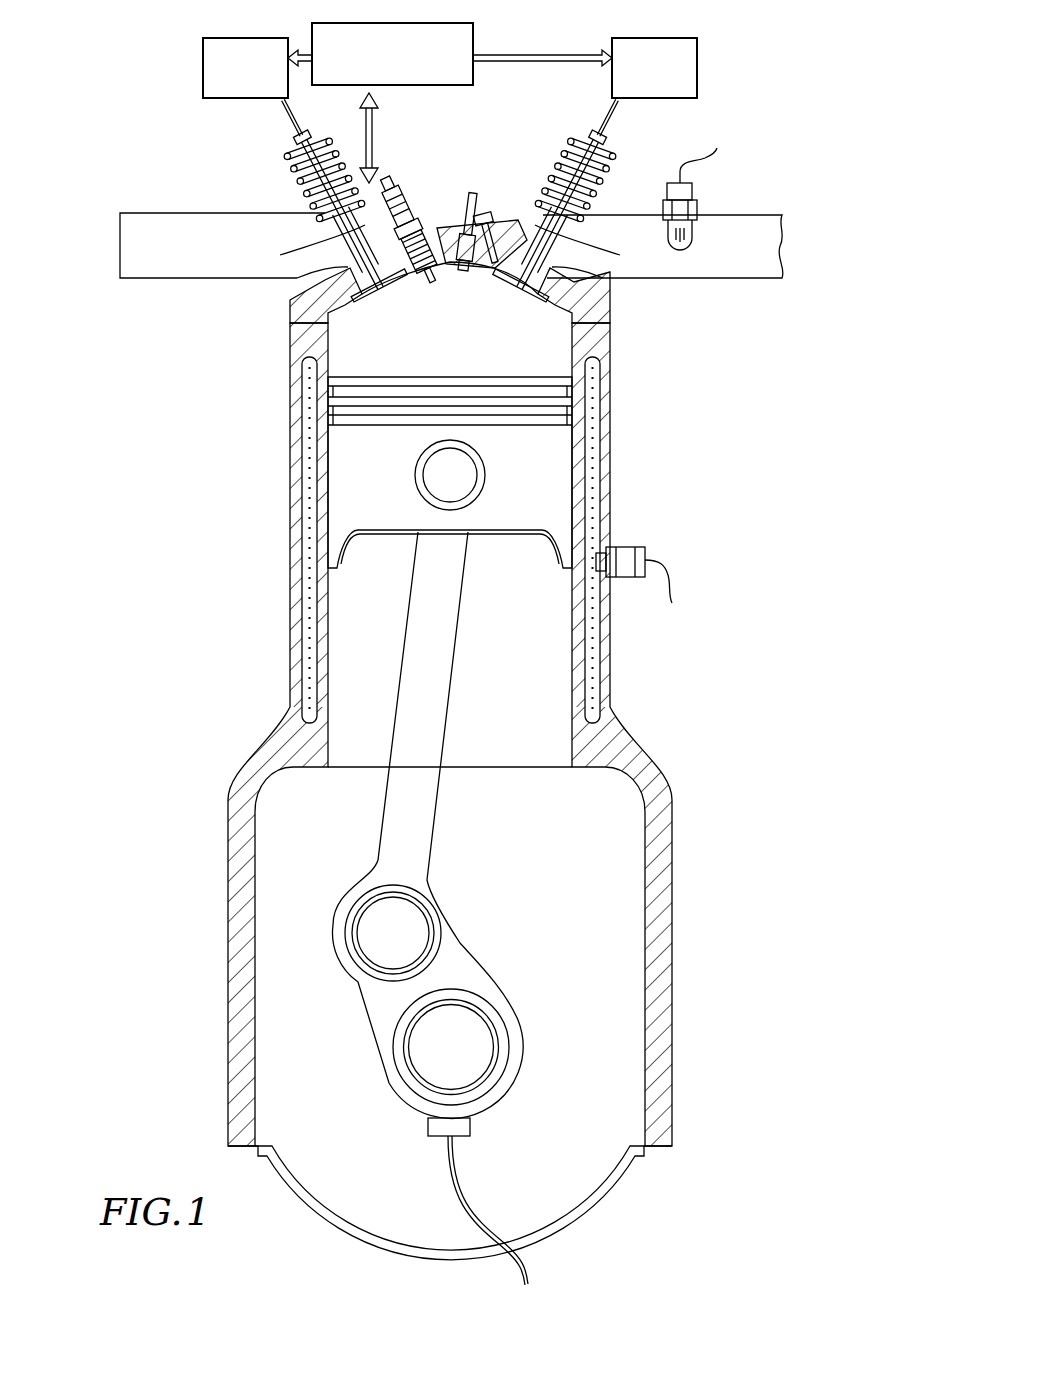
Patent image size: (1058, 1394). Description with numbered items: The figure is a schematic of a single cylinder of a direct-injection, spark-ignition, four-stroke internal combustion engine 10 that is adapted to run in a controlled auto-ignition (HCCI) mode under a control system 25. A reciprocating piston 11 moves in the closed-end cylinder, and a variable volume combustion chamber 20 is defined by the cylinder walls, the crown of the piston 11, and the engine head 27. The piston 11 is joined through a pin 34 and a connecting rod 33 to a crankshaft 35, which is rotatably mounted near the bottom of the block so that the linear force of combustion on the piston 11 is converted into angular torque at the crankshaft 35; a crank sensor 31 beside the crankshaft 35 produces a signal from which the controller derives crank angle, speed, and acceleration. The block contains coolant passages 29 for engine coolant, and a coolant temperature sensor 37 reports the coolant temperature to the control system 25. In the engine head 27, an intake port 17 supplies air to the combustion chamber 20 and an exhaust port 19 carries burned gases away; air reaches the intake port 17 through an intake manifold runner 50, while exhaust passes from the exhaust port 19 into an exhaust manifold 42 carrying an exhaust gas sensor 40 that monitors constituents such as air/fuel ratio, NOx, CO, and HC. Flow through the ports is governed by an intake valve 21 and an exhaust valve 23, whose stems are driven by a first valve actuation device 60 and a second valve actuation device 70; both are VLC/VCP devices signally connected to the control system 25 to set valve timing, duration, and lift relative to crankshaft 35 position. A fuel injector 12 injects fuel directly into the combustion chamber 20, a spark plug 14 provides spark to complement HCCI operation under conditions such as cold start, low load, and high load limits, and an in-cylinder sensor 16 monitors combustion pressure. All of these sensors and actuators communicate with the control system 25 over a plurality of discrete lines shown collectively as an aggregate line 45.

The internal combustion engine 10 is at (375, 791).
The piston 11 is at (548, 483).
The fuel injector 12 is at (466, 215).
The spark plug 14 is at (404, 198).
The in-cylinder sensor 16 is at (492, 212).
The intake port 17 is at (345, 283).
The exhaust port 19 is at (588, 286).
The combustion chamber 20 is at (350, 353).
The intake valve 21 is at (346, 238).
The exhaust valve 23 is at (548, 251).
The control system 25 is at (474, 32).
The engine head 27 is at (600, 314).
The coolant passages 29 is at (597, 412).
The crank sensor 31 is at (430, 1130).
The connecting rod 33 is at (427, 634).
The pin 34 is at (445, 475).
The crankshaft 35 is at (393, 1047).
The coolant temperature sensor 37 is at (643, 552).
The exhaust gas sensor 40 is at (695, 207).
The exhaust manifold 42 is at (770, 246).
The aggregate line 45 is at (376, 128).
The intake manifold runner 50 is at (190, 268).
The valve actuation device 60 is at (212, 50).
The second valve actuation device 70 is at (688, 50).